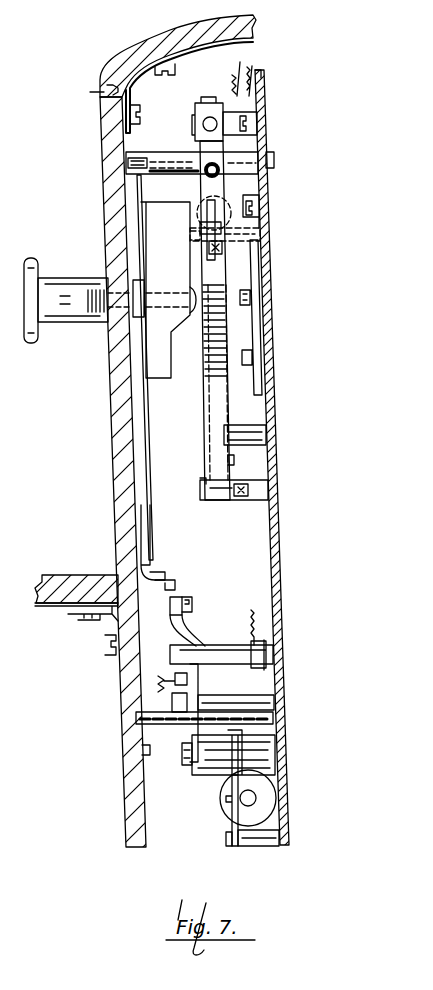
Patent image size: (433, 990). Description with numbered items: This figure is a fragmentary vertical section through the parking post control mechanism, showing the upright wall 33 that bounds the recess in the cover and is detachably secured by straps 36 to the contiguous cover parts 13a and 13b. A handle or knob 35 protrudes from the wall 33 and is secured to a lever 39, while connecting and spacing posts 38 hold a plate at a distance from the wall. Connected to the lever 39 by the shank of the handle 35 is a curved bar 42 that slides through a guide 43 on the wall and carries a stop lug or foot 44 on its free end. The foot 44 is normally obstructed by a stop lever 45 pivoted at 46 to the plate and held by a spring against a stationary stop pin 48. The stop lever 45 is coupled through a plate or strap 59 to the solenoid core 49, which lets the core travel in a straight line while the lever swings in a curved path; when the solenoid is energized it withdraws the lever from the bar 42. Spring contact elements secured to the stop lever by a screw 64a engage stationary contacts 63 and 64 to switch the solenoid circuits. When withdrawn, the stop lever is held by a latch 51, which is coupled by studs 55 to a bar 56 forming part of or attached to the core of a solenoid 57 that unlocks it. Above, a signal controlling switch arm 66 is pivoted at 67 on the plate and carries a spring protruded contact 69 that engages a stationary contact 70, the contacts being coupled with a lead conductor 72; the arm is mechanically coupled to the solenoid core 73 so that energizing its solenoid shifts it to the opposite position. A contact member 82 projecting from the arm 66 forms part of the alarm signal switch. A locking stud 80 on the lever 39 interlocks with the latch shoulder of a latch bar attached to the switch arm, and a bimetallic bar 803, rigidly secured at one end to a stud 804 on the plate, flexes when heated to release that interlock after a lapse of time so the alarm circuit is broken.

The cover part 13b is at (148, 50).
The upright wall 33 is at (120, 456).
The straps 36 is at (90, 92).
The connecting and spacing posts 38 is at (127, 162).
The signal controlling switch arm 66 is at (206, 412).
The spring protruded contact 69 is at (204, 124).
The solenoid core 73 is at (222, 178).
The stationary contact 70 is at (259, 118).
The lead conductor 72 is at (230, 78).
The contact member 82 is at (218, 262).
The locking stud 80 is at (261, 236).
The handle or knob 35 is at (72, 284).
The lever 39 is at (162, 328).
The curved bar 42 is at (146, 398).
The stud 804 is at (256, 434).
The bimetallic bar 803 is at (214, 424).
The pivot 67 is at (202, 494).
The cover part 13a is at (74, 576).
The guide 43 is at (160, 568).
The stop lug or foot 44 is at (178, 588).
The stop lever 45 is at (186, 602).
The plate or strap 59 is at (194, 604).
The solenoid core 49 is at (192, 622).
The stationary contact 64 is at (256, 658).
The screw 64a is at (188, 684).
The stationary contact 63 is at (256, 708).
The stationary stop pin 48 is at (190, 738).
The pivot 46 is at (190, 772).
The bar 56 is at (258, 798).
The studs 55 is at (234, 806).
The solenoid 57 is at (281, 814).
The latch 51 is at (234, 850).